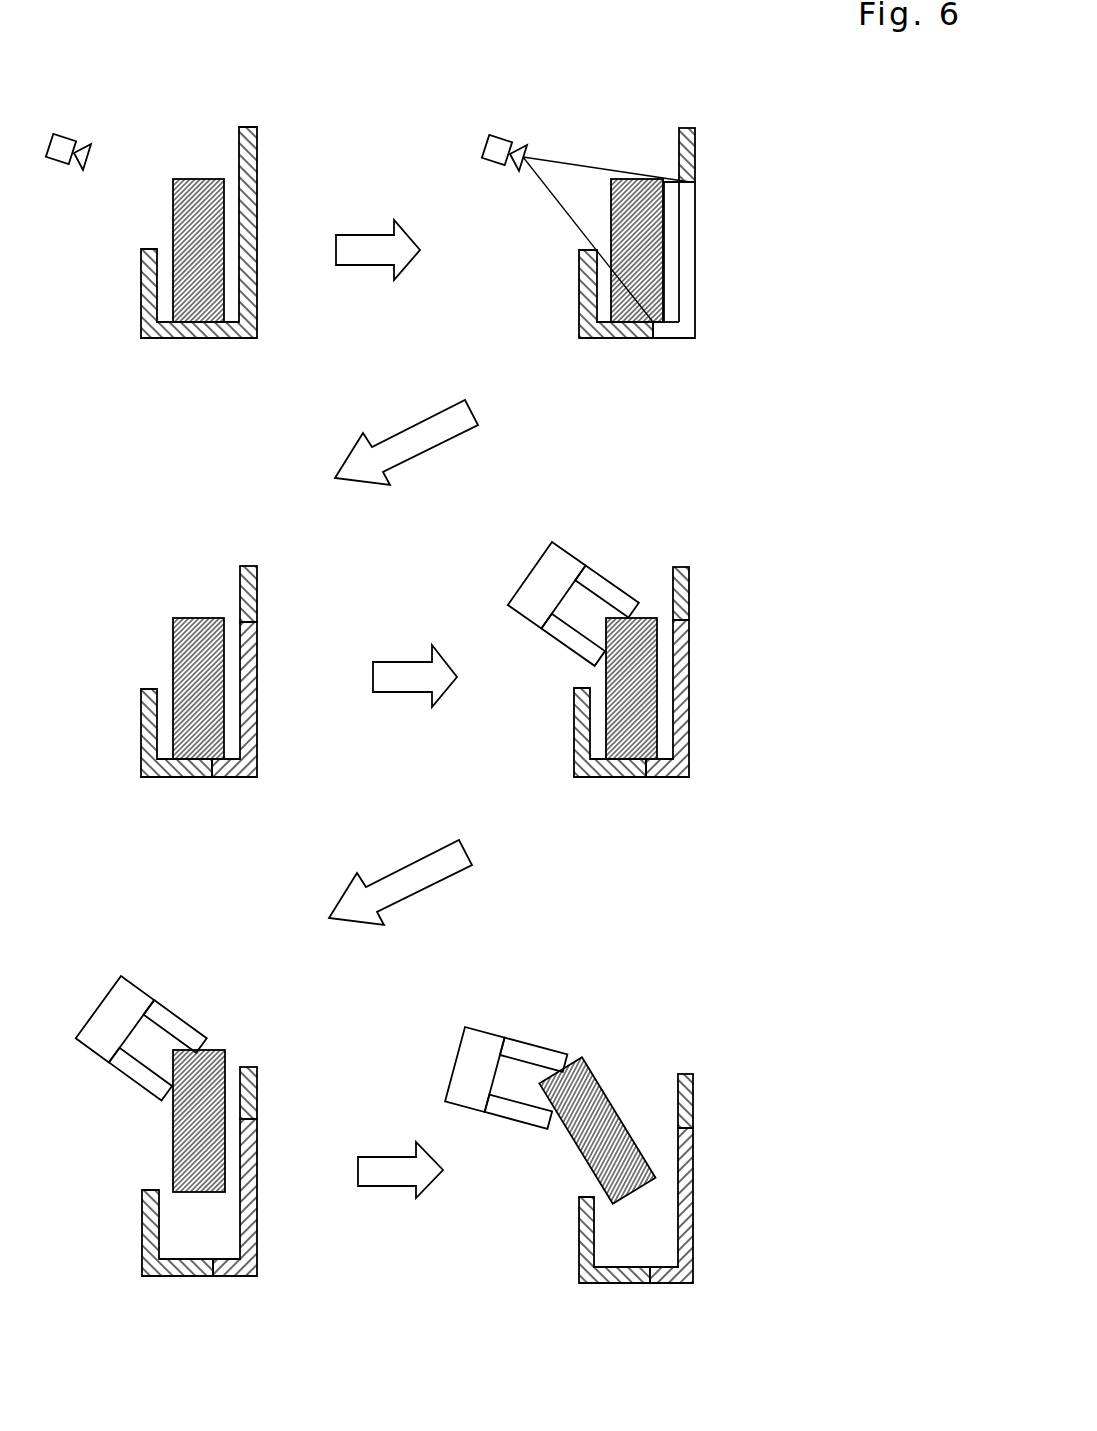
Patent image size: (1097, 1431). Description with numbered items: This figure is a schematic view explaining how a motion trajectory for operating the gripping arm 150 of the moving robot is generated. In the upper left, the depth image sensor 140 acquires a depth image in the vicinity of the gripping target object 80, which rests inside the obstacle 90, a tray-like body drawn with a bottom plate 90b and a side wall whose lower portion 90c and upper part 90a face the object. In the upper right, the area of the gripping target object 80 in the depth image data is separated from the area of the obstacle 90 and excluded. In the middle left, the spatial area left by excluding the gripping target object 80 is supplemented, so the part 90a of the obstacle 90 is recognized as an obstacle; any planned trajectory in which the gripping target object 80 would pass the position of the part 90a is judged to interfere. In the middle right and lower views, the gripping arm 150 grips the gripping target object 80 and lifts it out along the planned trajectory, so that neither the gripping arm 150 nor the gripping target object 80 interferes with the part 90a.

The gripping target object 80 is at (180, 179).
The obstacle 90 is at (485, 703).
The part in the obstacle 90a is at (696, 157).
The bottom plate of tray 90b is at (617, 340).
The lower side wall portion of tray 90c is at (691, 273).
The depth image sensor 140 is at (62, 136).
The gripping arm 150 is at (568, 550).